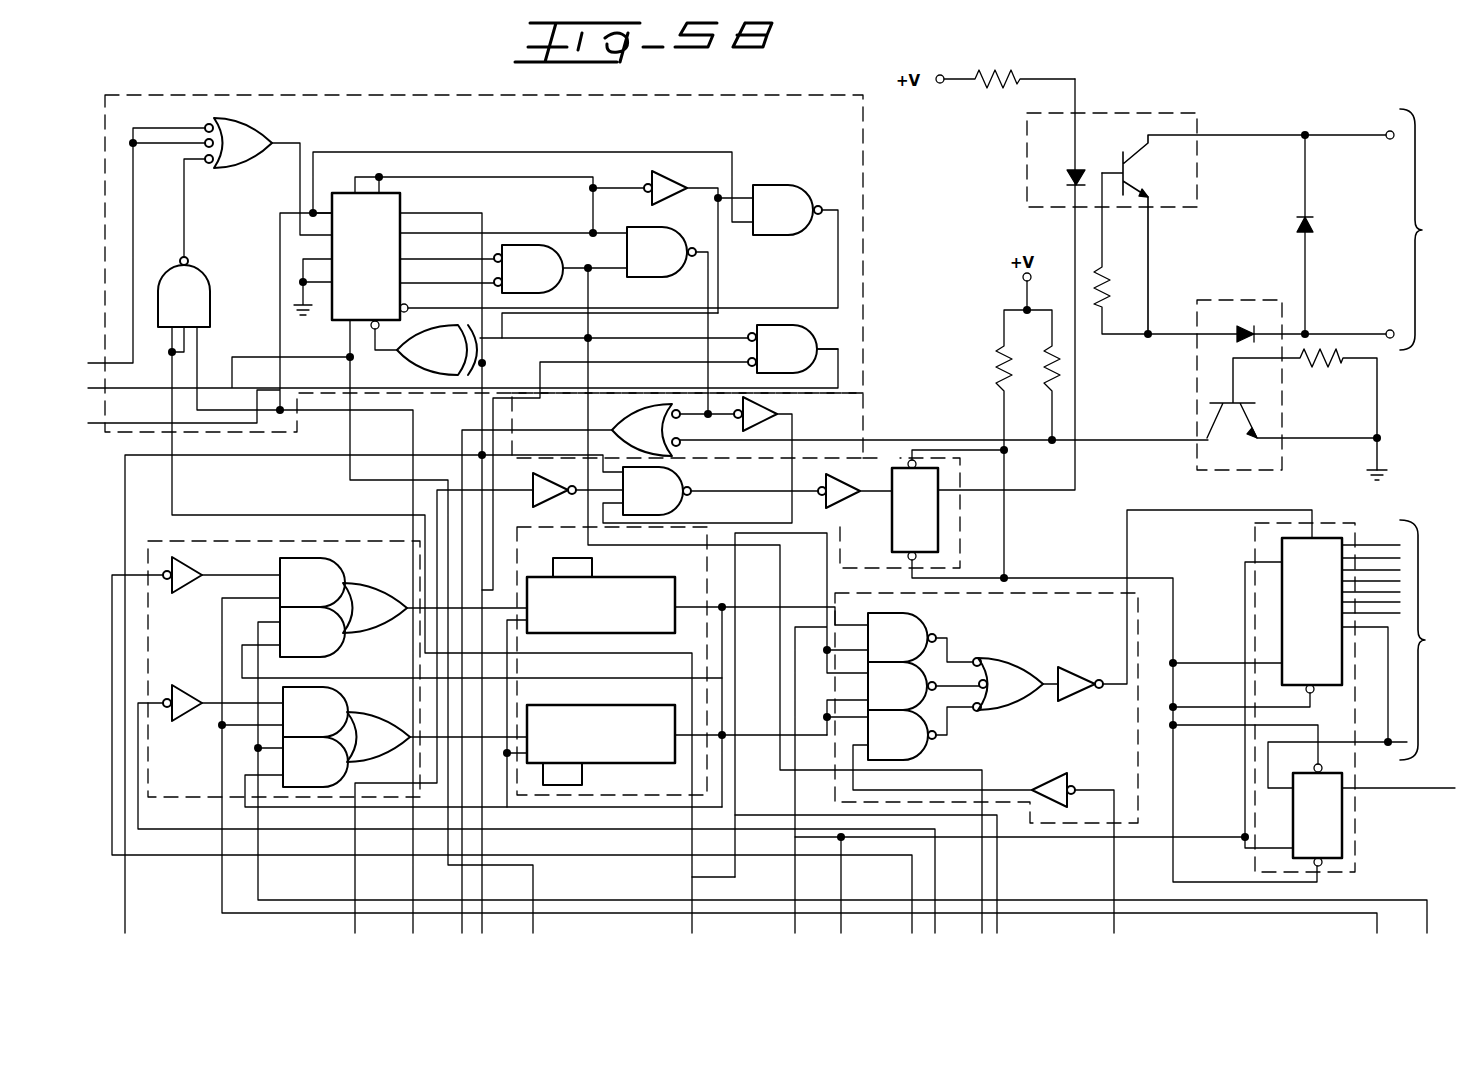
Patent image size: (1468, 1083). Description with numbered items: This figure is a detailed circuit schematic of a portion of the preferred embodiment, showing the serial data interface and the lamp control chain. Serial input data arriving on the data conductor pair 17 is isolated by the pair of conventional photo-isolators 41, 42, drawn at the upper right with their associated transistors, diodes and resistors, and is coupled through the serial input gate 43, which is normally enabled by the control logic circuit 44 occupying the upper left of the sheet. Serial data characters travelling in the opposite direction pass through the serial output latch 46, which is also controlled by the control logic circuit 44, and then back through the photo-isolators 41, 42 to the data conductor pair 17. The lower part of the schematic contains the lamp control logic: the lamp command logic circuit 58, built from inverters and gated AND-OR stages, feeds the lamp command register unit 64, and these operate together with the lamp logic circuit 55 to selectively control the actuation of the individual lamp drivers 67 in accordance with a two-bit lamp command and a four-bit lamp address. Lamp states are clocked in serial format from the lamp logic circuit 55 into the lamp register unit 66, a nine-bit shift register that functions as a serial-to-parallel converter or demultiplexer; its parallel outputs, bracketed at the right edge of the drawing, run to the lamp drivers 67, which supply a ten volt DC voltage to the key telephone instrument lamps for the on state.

The control logic circuit 44 is at (352, 92).
The serial input gate 43 is at (866, 403).
The serial output latch 46 is at (880, 460).
The lamp command logic circuit 58 is at (230, 543).
The lamp command register unit 64 is at (705, 590).
The lamp logic circuit 55 is at (1042, 594).
The photo-isolator 42 is at (1163, 108).
The photo-isolator 41 is at (1226, 298).
The data conductor pair 17 is at (1424, 229).
The lamp register unit 66 is at (1255, 552).
The lamp drivers 67 is at (1428, 640).